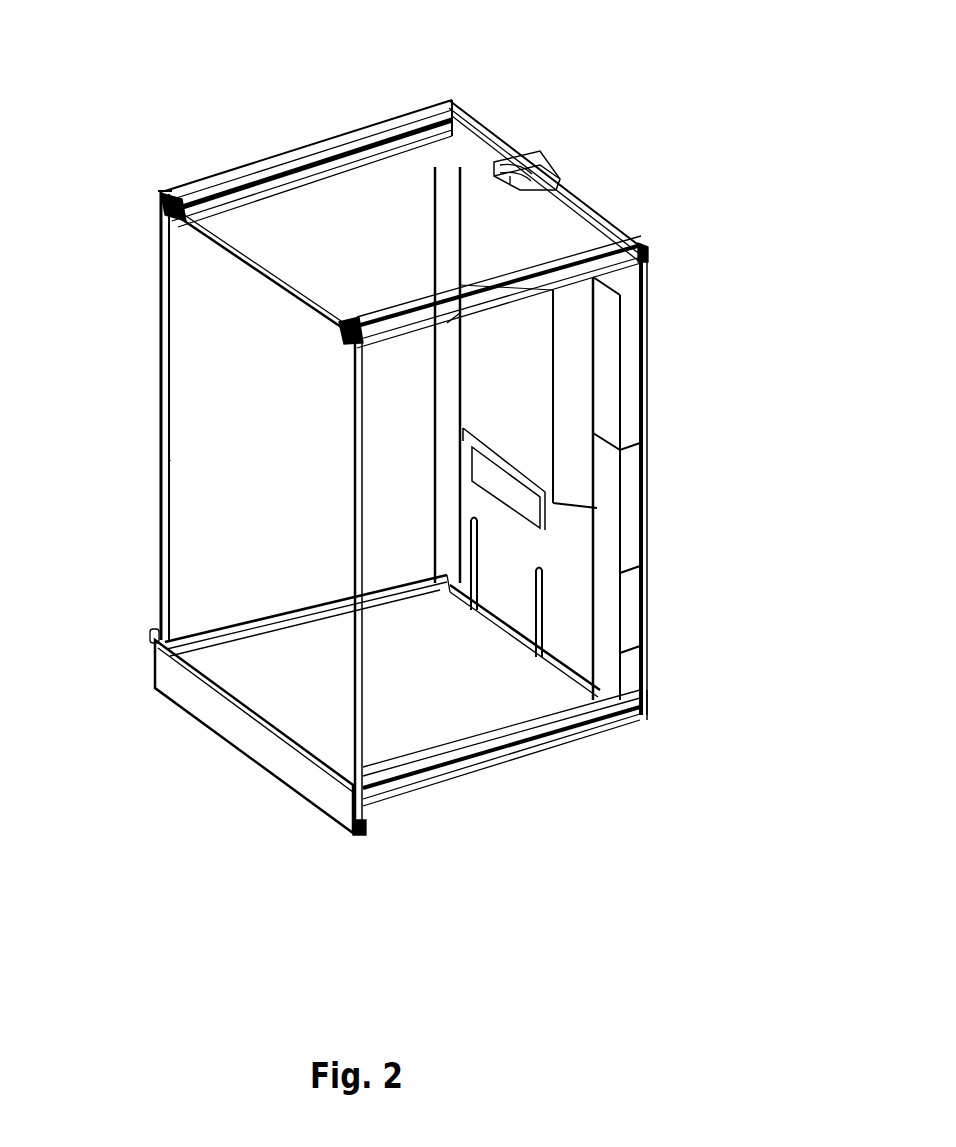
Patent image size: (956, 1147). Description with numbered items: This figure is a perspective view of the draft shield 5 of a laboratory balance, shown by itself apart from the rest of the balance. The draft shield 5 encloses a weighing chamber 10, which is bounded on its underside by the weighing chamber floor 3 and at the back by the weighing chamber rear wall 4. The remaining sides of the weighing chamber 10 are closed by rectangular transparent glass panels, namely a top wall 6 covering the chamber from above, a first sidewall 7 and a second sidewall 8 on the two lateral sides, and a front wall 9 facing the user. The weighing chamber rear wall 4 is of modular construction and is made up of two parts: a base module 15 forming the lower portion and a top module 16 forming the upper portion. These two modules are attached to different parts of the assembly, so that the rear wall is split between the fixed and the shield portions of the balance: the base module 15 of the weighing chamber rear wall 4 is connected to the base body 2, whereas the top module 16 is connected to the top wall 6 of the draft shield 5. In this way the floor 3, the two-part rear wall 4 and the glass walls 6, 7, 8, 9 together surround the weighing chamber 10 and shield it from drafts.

The base body 2 is at (522, 760).
The weighing chamber floor 3 is at (395, 712).
The weighing chamber rear wall 4 is at (585, 197).
The draft shield 5 is at (164, 190).
The top wall 6 is at (352, 222).
The first sidewall 7 is at (265, 530).
The second sidewall 8 is at (415, 513).
The front wall 9 is at (235, 715).
The weighing chamber 10 is at (315, 410).
The base module 15 is at (560, 590).
The top module 16 is at (553, 367).